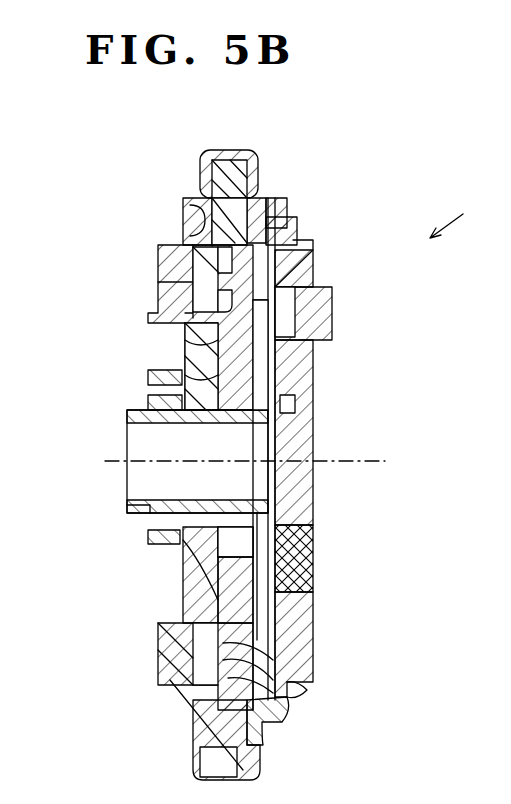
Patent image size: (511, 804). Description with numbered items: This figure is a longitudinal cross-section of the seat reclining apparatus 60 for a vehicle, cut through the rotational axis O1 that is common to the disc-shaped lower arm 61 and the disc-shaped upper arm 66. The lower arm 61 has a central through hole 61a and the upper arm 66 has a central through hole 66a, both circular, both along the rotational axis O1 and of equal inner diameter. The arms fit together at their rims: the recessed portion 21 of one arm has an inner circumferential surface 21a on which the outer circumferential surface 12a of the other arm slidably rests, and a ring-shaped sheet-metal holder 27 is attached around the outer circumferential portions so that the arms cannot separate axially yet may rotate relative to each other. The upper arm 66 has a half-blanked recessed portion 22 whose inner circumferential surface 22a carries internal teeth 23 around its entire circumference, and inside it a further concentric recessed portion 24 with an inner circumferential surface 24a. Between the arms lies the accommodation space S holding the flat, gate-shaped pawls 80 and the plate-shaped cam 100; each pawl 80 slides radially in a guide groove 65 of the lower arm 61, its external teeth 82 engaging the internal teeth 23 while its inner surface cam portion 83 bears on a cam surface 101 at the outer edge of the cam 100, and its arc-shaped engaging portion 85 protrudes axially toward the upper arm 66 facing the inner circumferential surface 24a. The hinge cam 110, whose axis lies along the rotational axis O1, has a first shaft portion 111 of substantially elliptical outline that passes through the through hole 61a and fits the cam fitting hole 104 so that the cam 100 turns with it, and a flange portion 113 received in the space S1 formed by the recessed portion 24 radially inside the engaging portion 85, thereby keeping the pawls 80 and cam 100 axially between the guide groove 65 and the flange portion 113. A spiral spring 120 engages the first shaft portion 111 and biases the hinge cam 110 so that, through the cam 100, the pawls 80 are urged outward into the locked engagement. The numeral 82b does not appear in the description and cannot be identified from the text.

The seat reclining apparatus 60 is at (463, 219).
The rotational axis O1 is at (385, 461).
The holder 27 is at (213, 150).
The outer circumferential surface 12a is at (262, 195).
The recessed portion 21 is at (285, 198).
The inner circumferential surface 21a is at (190, 199).
The recessed portion 22 is at (184, 234).
The external teeth 82 is at (287, 228).
The lower arm 61 is at (158, 272).
The pawl 80 is at (160, 292).
The inner surface cam portion 83 is at (170, 321).
The guide groove 65 is at (186, 345).
The cam surface 101 is at (172, 362).
The hinge cam 110 is at (150, 390).
The through hole 61a is at (197, 461).
The first shaft portion 111 is at (135, 515).
The spiral spring 120 is at (150, 542).
The recessed portion 24 is at (184, 585).
The accommodation space S is at (184, 612).
The space S1 is at (160, 646).
The engaging portion 85 is at (313, 265).
The upper arm 66 is at (333, 318).
The cam 100 is at (313, 353).
The through hole 66a is at (295, 412).
The cam fitting hole 104 is at (275, 487).
The flange portion 113 is at (313, 553).
The internal teeth 23 is at (313, 643).
The inner circumferential surface 22a is at (307, 673).
The inner circumferential surface 24a is at (287, 705).
The nut (lower) 82b is at (255, 762).